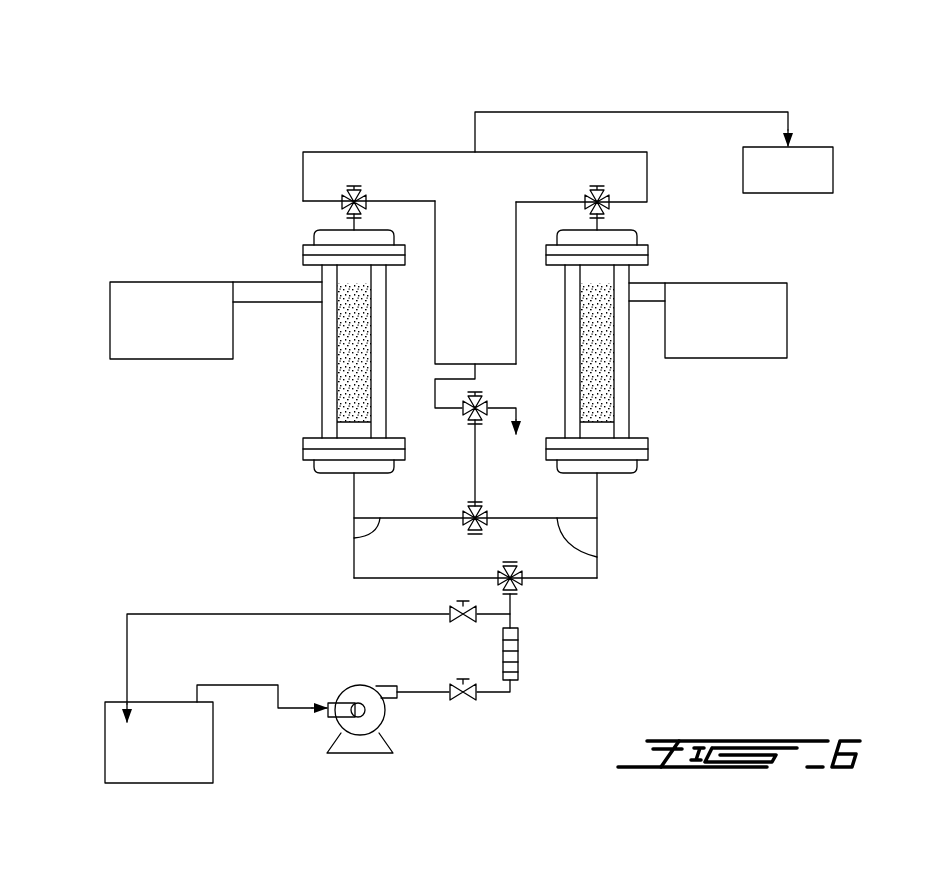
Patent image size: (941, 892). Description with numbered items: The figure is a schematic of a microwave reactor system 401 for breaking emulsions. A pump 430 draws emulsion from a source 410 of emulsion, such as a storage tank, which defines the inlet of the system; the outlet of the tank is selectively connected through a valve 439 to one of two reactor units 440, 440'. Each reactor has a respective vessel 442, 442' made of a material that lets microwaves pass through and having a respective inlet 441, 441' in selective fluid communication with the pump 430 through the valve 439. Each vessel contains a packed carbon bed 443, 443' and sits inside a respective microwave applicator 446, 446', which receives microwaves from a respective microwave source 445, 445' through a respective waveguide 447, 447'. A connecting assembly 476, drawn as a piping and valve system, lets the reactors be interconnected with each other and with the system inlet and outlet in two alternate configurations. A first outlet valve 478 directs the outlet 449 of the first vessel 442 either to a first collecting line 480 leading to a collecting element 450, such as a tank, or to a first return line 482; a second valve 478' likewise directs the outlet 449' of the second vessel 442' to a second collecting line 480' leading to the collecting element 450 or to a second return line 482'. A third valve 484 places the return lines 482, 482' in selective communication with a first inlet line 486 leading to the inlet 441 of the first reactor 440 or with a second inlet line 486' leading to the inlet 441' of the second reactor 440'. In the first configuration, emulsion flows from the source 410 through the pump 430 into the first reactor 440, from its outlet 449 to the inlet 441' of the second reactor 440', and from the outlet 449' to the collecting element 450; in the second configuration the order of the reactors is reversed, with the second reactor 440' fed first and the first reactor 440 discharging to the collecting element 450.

The microwave reactor system 401 is at (143, 98).
The source of emulsion 410 is at (122, 748).
The pump 430 is at (385, 722).
The valve 439 is at (520, 582).
The first reactor unit 440 is at (306, 289).
The second reactor unit 440' is at (660, 343).
The inlet of the first reactor 441 is at (304, 525).
The inlet of the second reactor 441' is at (638, 525).
The first vessel 442 is at (294, 358).
The second vessel 442' is at (654, 351).
The packed carbon bed 443 is at (289, 352).
The packed carbon bed 443' is at (652, 352).
The first microwave source 445 is at (163, 278).
The second microwave source 445' is at (779, 319).
The first microwave applicator 446 is at (315, 351).
The second microwave applicator 446' is at (669, 371).
The first waveguide 447 is at (256, 261).
The second waveguide 447' is at (674, 262).
The outlet of the first reactor 449 is at (327, 175).
The outlet of the second reactor 449' is at (630, 204).
The collecting element 450 is at (812, 170).
The connecting assembly 476 is at (418, 200).
The first outlet valve 478 is at (343, 154).
The second valve 478' is at (609, 140).
The first collecting line 480 is at (475, 126).
The second collecting line 480' is at (631, 105).
The first return line 482 is at (475, 317).
The second return line 482' is at (489, 283).
The third valve 484 is at (469, 522).
The first inlet line 486 is at (325, 536).
The second inlet line 486' is at (603, 569).